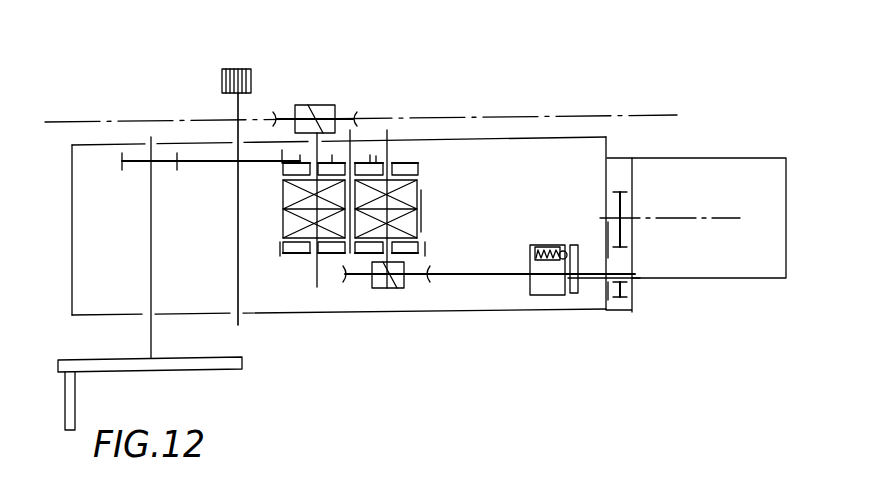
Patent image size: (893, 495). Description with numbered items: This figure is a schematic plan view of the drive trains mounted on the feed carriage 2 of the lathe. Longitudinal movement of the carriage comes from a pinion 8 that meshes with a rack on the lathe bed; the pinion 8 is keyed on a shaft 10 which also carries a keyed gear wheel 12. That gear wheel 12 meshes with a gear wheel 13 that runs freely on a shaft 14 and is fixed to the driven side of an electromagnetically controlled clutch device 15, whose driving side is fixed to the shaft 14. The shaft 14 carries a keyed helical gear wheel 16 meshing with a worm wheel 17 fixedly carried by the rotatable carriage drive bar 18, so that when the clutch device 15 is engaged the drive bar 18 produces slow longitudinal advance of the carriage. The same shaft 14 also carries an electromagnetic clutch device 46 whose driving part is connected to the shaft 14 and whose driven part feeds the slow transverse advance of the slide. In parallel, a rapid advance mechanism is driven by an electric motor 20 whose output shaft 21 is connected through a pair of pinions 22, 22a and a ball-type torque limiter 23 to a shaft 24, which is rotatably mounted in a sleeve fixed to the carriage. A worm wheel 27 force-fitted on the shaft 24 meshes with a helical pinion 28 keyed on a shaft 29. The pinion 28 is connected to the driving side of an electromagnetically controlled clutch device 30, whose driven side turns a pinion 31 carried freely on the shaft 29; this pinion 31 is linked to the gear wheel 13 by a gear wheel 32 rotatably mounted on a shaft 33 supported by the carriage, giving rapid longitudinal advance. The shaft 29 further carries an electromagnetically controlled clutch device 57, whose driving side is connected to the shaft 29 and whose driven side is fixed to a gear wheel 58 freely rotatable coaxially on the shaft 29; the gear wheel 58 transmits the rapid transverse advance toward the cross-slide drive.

The feed carriage 2 is at (503, 148).
The pinion 8 is at (240, 63).
The shaft 10 is at (237, 238).
The gear wheel 12 is at (213, 165).
The gear wheel 13 is at (322, 154).
The shaft 14 is at (313, 143).
The electromagnetically controlled clutch device 15 is at (283, 193).
The helical gear wheel 16 is at (273, 112).
The worm wheel 17 is at (318, 103).
The carriage drive bar 18 is at (488, 100).
The electric motor 20 is at (735, 163).
The output shaft 21 is at (613, 218).
The pinion 22 is at (625, 204).
The pinion 22a is at (630, 287).
The torque limiter 23 is at (550, 233).
The shaft 24 is at (477, 276).
The worm wheel 27 is at (402, 286).
The helical pinion 28 is at (358, 277).
The shaft 29 is at (388, 150).
The electromagnetically controlled clutch device 30 is at (420, 190).
The pinion 31 is at (377, 154).
The gear wheel 32 is at (369, 153).
The shaft 33 is at (351, 150).
The electromagnetic clutch device 46 is at (285, 228).
The electromagnetically controlled clutch device 57 is at (420, 222).
The gear wheel 58 is at (420, 243).